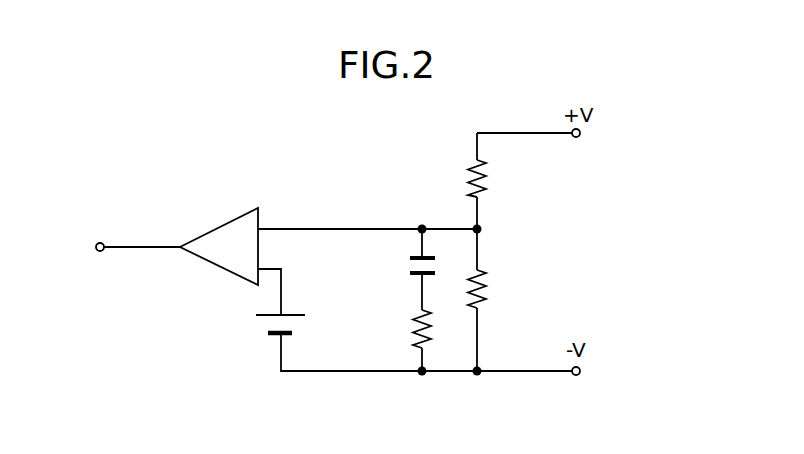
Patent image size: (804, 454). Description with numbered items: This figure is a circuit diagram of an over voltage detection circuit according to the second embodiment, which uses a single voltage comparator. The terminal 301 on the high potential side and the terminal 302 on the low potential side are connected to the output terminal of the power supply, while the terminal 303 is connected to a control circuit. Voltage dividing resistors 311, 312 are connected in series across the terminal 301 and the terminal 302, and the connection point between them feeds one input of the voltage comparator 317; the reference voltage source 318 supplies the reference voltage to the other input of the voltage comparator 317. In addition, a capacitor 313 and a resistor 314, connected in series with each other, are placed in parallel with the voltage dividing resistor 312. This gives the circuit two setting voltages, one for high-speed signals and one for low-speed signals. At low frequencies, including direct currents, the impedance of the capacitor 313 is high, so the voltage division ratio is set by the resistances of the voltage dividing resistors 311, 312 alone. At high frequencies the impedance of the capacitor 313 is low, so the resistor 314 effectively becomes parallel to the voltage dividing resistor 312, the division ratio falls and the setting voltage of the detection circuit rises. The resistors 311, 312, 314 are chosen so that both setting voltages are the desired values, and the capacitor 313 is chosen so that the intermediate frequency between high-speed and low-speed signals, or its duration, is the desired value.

The terminal 301 is at (583, 132).
The terminal 302 is at (582, 371).
The terminal 303 is at (97, 243).
The voltage dividing resistor 311 is at (487, 182).
The voltage dividing resistor 312 is at (488, 293).
The capacitor 313 is at (408, 268).
The resistor 314 is at (407, 326).
The voltage comparator 317 is at (218, 223).
The reference voltage source 318 is at (263, 323).